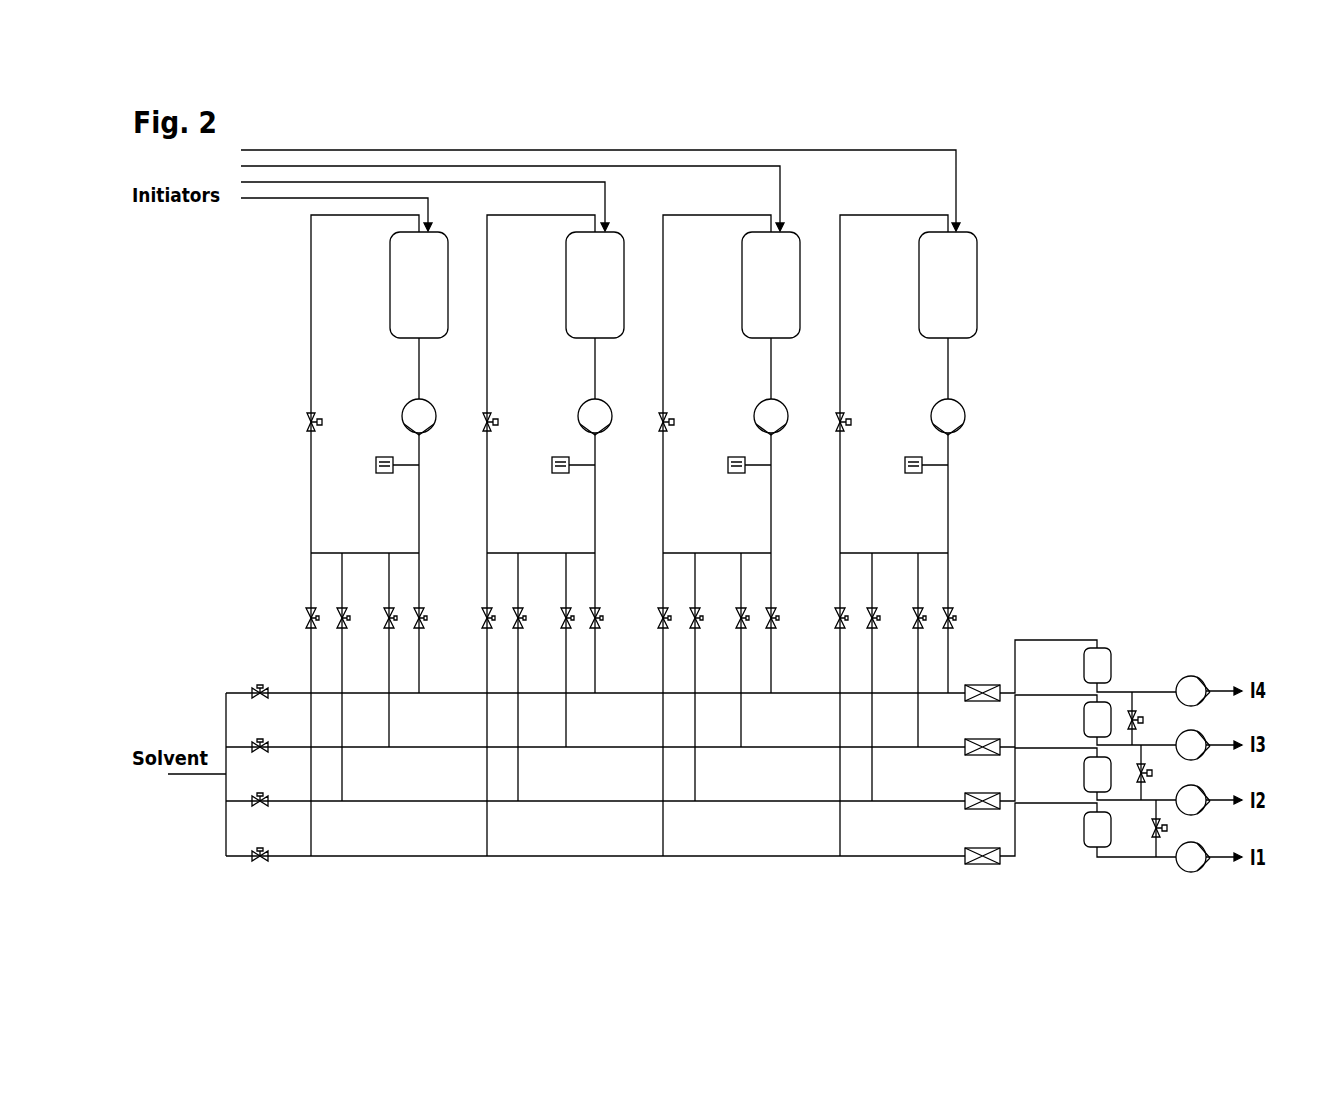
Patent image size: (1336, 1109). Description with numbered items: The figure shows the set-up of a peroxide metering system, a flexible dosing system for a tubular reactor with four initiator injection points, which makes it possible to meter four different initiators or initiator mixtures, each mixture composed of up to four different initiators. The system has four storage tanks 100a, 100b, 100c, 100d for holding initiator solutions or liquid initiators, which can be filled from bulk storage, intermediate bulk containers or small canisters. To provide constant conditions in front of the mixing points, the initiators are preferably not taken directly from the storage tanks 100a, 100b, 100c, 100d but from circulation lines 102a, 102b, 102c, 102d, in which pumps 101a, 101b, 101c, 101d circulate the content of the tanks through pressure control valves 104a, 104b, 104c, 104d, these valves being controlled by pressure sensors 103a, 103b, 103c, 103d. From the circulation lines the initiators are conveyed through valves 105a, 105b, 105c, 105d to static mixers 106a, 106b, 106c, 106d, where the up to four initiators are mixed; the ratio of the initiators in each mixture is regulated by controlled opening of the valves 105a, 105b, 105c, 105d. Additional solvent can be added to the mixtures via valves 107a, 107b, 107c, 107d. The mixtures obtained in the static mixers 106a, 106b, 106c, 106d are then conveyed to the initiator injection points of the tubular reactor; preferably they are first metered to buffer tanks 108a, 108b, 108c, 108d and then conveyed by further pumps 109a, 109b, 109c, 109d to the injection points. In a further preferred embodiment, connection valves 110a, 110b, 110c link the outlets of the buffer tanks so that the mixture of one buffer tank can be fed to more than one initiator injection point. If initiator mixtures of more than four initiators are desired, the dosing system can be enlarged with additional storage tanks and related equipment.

The storage tank 100a is at (435, 246).
The storage tank 100b is at (611, 246).
The storage tank 100c is at (787, 246).
The storage tank 100d is at (964, 246).
The pump 101a is at (407, 405).
The pump 101b is at (583, 405).
The pump 101c is at (759, 405).
The pump 101d is at (936, 405).
The circulation line 102a is at (311, 300).
The circulation line 102b is at (487, 300).
The circulation line 102c is at (663, 300).
The circulation line 102d is at (840, 300).
The pressure sensor 103a is at (385, 476).
The pressure sensor 103b is at (561, 476).
The pressure sensor 103c is at (737, 476).
The pressure sensor 103d is at (914, 476).
The pressure control valve 104a is at (308, 430).
The pressure control valve 104b is at (484, 430).
The pressure control valve 104c is at (660, 430).
The pressure control valve 104d is at (837, 430).
The valve 105a is at (421, 607).
The valve 105b is at (597, 607).
The valve 105c is at (773, 607).
The valve 105d is at (950, 607).
The static mixer 106a is at (981, 863).
The static mixer 106b is at (981, 808).
The static mixer 106c is at (981, 754).
The static mixer 106d is at (981, 700).
The valve 107a is at (261, 862).
The valve 107b is at (261, 807).
The valve 107c is at (261, 753).
The valve 107d is at (261, 699).
The buffer tank 108a is at (1083, 827).
The buffer tank 108b is at (1083, 772).
The buffer tank 108c is at (1083, 717).
The buffer tank 108d is at (1083, 662).
The pump 109a is at (1208, 867).
The pump 109b is at (1208, 810).
The pump 109c is at (1208, 755).
The pump 109d is at (1208, 701).
The connection valve 110a is at (1160, 828).
The connection valve 110b is at (1148, 773).
The connection valve 110c is at (1140, 720).